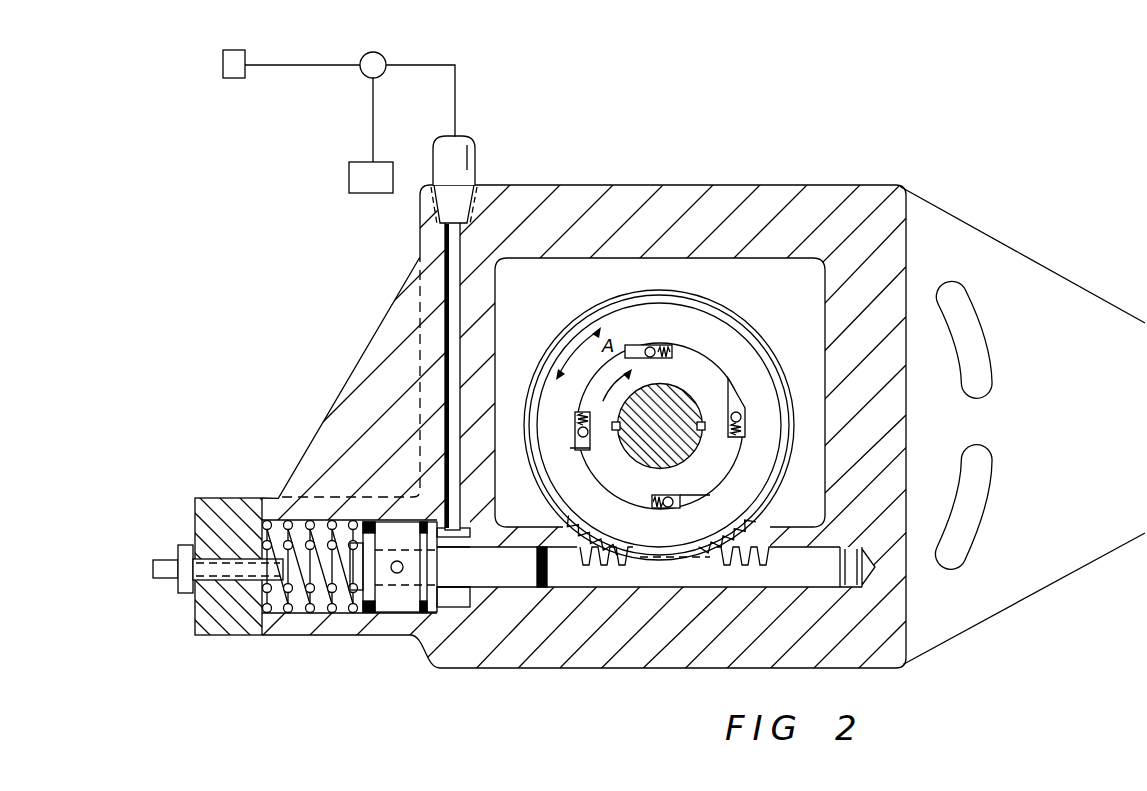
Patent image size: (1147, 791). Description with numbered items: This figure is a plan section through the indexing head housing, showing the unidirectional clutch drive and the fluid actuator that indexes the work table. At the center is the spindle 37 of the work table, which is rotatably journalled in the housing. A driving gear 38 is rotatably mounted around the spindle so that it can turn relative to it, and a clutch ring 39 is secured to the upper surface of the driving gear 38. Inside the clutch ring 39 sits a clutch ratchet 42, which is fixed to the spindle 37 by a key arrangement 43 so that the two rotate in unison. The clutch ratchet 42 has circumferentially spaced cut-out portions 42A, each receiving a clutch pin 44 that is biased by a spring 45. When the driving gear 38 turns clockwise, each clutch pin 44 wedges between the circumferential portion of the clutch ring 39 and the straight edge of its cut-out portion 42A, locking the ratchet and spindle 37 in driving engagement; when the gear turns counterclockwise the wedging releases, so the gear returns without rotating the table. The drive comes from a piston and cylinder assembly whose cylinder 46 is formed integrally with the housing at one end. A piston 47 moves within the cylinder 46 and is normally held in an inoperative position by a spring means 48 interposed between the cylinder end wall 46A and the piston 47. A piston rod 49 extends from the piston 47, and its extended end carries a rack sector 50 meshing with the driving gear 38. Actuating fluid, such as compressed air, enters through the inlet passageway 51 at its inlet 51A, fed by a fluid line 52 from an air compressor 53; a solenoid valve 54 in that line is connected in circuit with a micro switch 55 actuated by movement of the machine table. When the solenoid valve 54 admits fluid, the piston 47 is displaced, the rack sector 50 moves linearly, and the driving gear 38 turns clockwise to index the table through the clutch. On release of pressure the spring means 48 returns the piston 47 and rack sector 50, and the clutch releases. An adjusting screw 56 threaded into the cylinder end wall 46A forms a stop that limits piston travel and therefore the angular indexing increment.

The spindle 37 is at (672, 404).
The driving gear 38 is at (773, 342).
The clutch ring 39 is at (778, 466).
The clutch ratchet 42 is at (625, 352).
The cut-out portion 42A is at (575, 447).
The key arrangement 43 is at (615, 432).
The clutch pin 44 is at (648, 348).
The spring 45 is at (667, 345).
The cylinder 46 is at (352, 642).
The cylinder end wall 46A is at (230, 636).
The piston 47 is at (398, 612).
The spring means 48 is at (307, 611).
The piston rod 49 is at (512, 588).
The rack sector 50 is at (455, 596).
The inlet passageway 51 is at (447, 257).
The inlet 51A is at (436, 208).
The fluid line 52 is at (473, 150).
The air compressor 53 is at (360, 167).
The solenoid valve 54 is at (384, 55).
The micro switch 55 is at (233, 79).
The adjusting screw 56 is at (165, 583).